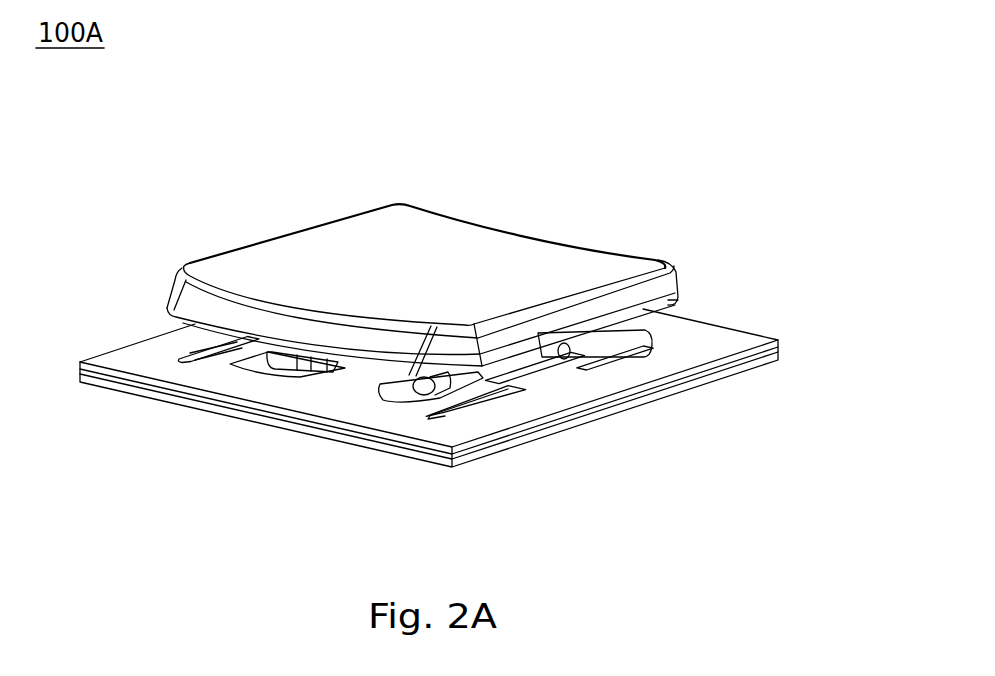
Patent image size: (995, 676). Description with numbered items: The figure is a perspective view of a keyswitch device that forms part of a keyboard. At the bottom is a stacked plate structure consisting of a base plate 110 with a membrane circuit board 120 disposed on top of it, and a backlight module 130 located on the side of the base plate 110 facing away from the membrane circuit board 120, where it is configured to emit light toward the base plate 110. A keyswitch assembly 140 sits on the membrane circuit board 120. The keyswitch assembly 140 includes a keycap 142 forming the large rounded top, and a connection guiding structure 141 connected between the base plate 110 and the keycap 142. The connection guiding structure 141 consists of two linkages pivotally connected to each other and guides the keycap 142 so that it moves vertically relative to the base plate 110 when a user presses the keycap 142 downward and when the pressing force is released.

The keyswitch assembly 140 is at (389, 267).
The keycap 142 is at (480, 238).
The connection guiding structure 141 is at (645, 340).
The membrane circuit board 120 is at (786, 341).
The base plate 110 is at (786, 350).
The backlight module 130 is at (787, 357).